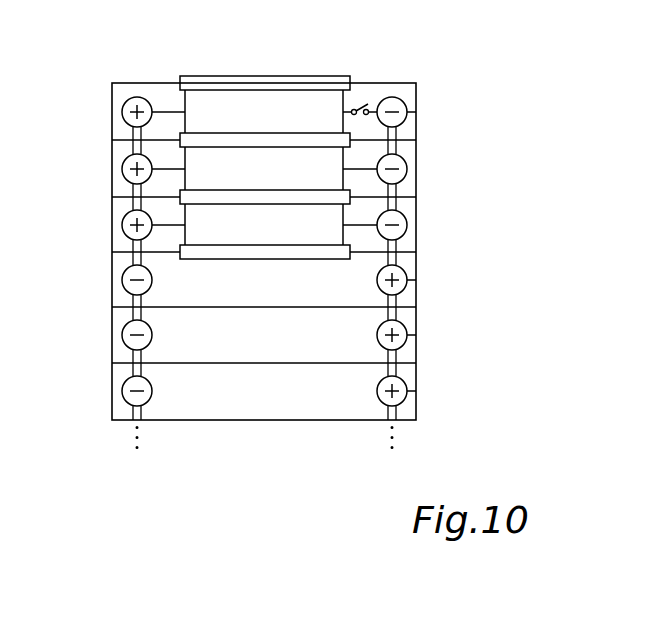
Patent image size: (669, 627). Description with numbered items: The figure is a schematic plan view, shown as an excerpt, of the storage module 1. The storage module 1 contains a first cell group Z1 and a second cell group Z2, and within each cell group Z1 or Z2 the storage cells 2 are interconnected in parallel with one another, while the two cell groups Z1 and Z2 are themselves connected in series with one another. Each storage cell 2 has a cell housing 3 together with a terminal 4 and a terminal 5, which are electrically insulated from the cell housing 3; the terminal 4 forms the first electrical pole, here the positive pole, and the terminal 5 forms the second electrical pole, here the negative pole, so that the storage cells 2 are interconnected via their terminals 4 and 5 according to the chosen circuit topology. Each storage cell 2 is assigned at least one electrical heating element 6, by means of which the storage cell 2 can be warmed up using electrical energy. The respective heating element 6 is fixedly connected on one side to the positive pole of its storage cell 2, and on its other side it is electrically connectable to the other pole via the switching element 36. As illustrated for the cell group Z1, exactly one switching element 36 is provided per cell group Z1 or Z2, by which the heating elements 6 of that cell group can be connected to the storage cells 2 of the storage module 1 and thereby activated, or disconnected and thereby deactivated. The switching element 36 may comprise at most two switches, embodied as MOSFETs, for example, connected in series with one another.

The storage module 1 is at (415, 72).
The storage cell 2 is at (112, 128).
The cell housing 3 is at (112, 113).
The terminal 4 is at (140, 97).
The terminal 5 is at (407, 110).
The electrical heating element 6 is at (262, 76).
The switching element 36 is at (359, 99).
The cell group Z1 is at (443, 132).
The cell group Z2 is at (443, 297).